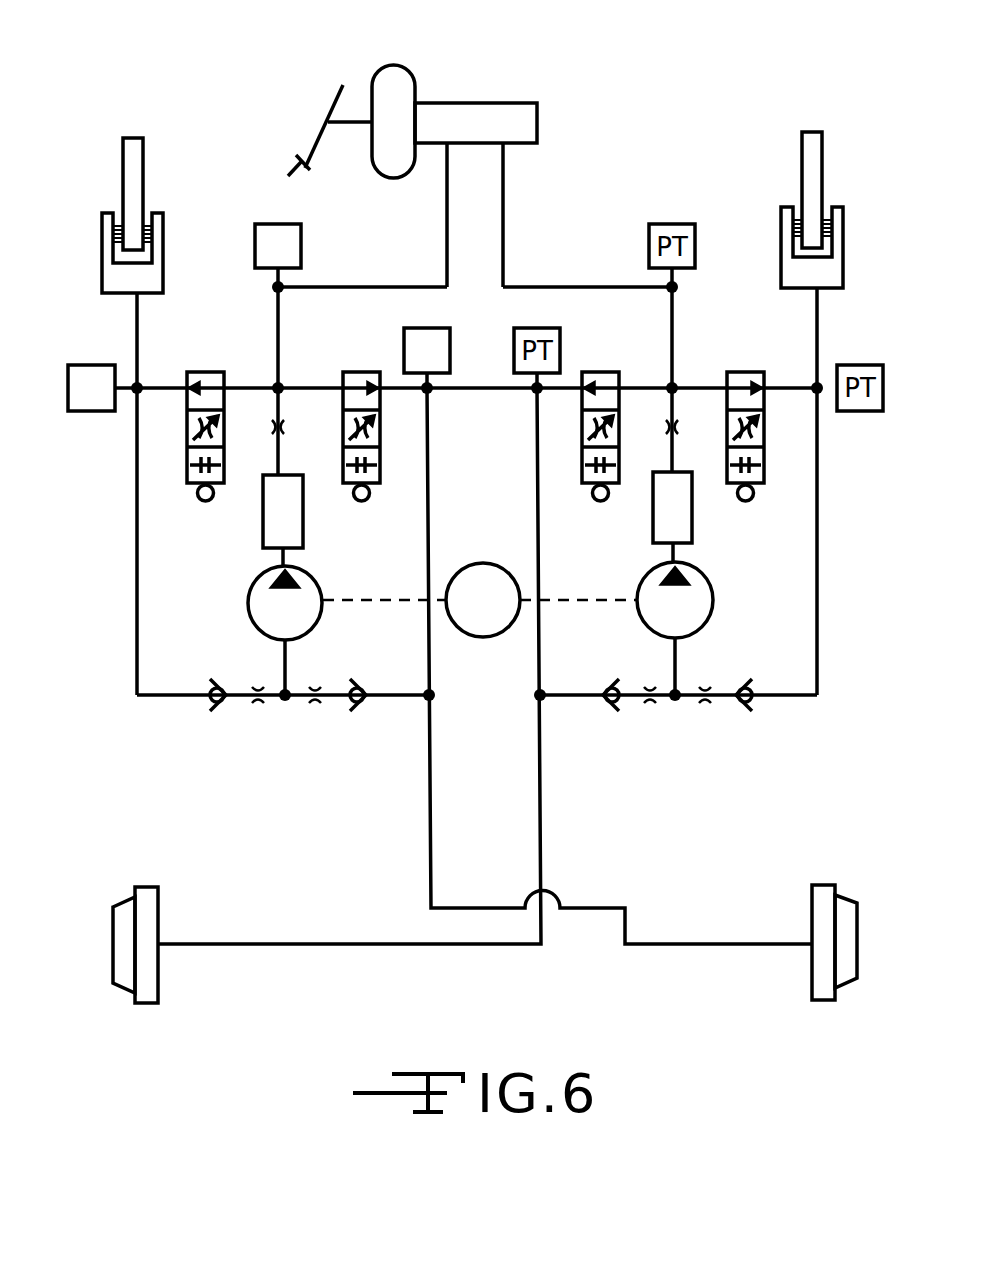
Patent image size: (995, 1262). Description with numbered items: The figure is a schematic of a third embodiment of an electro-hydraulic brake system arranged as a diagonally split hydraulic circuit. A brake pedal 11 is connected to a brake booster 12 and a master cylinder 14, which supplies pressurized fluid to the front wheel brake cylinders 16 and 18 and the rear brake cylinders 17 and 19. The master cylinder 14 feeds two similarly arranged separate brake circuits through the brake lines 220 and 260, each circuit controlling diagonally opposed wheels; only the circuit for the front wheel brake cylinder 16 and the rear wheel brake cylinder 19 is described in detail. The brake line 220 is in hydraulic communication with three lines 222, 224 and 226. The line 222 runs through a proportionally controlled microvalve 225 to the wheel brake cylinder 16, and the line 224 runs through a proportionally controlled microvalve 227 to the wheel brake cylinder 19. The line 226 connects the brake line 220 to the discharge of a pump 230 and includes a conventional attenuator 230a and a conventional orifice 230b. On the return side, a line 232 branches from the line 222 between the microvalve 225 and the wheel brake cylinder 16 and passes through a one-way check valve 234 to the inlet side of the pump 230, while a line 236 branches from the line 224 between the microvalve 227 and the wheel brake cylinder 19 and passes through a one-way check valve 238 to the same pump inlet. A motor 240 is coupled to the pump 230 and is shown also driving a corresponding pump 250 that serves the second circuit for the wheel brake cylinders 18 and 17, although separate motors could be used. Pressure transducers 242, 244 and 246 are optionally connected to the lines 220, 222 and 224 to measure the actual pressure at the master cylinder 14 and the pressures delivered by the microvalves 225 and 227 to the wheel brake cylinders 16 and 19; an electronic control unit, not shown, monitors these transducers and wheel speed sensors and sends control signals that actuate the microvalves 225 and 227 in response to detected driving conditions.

The brake pedal 11 is at (334, 101).
The brake booster 12 is at (390, 66).
The master cylinder 14 is at (484, 112).
The front wheel brake cylinder 16 is at (163, 255).
The rear brake cylinder 17 is at (141, 886).
The front wheel brake cylinder 18 is at (845, 255).
The rear brake cylinder 19 is at (813, 884).
The brake line 220 is at (327, 287).
The line 222 is at (272, 385).
The line 224 is at (335, 399).
The proportionally controlled microvalve 225 is at (185, 408).
The line 226 is at (285, 431).
The proportionally controlled microvalve 227 is at (371, 490).
The pump 230 is at (312, 573).
The attenuator 230a is at (263, 551).
The orifice 230b is at (273, 428).
The line 232 is at (140, 580).
The one-way check valve 234 is at (210, 684).
The line 236 is at (385, 694).
The one-way check valve 238 is at (350, 686).
The motor 240 is at (473, 562).
The pressure transducer 242 is at (262, 224).
The pressure transducer 244 is at (100, 366).
The pressure transducer 246 is at (413, 327).
The pump 250 is at (708, 570).
The brake line 260 is at (527, 287).